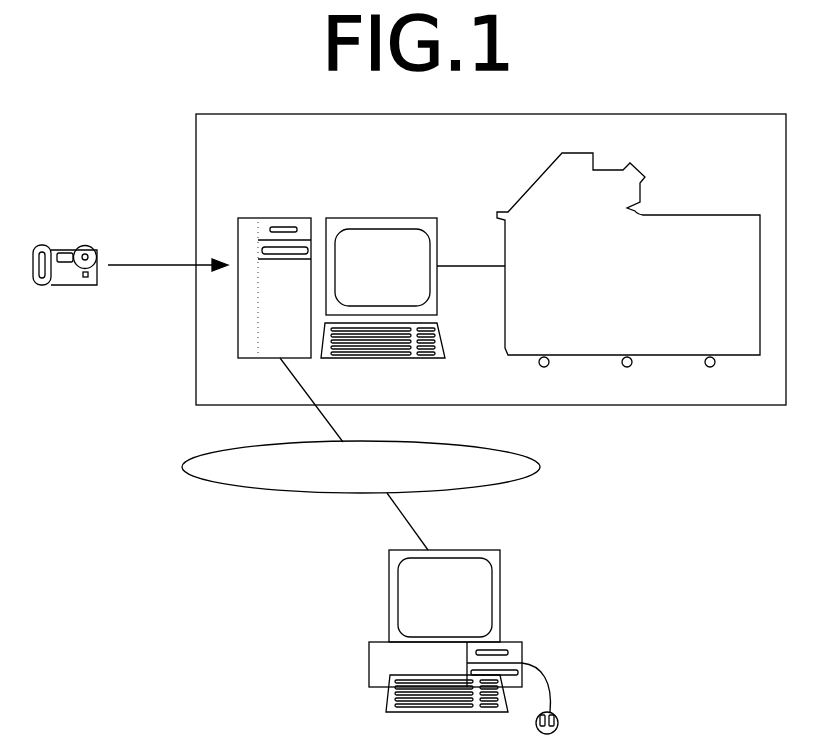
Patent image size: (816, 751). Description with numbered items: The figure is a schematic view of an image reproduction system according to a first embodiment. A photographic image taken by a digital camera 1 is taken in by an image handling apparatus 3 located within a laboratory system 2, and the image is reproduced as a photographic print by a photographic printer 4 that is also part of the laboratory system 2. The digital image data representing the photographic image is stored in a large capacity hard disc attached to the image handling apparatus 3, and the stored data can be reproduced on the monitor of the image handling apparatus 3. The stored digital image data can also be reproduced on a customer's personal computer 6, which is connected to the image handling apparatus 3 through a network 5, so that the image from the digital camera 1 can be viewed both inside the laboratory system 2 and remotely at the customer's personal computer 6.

The digital camera 1 is at (64, 247).
The laboratory system 2 is at (675, 405).
The image handling apparatus 3 is at (271, 218).
The photographic printer 4 is at (713, 215).
The network 5 is at (495, 488).
The personal computer 6 is at (503, 578).